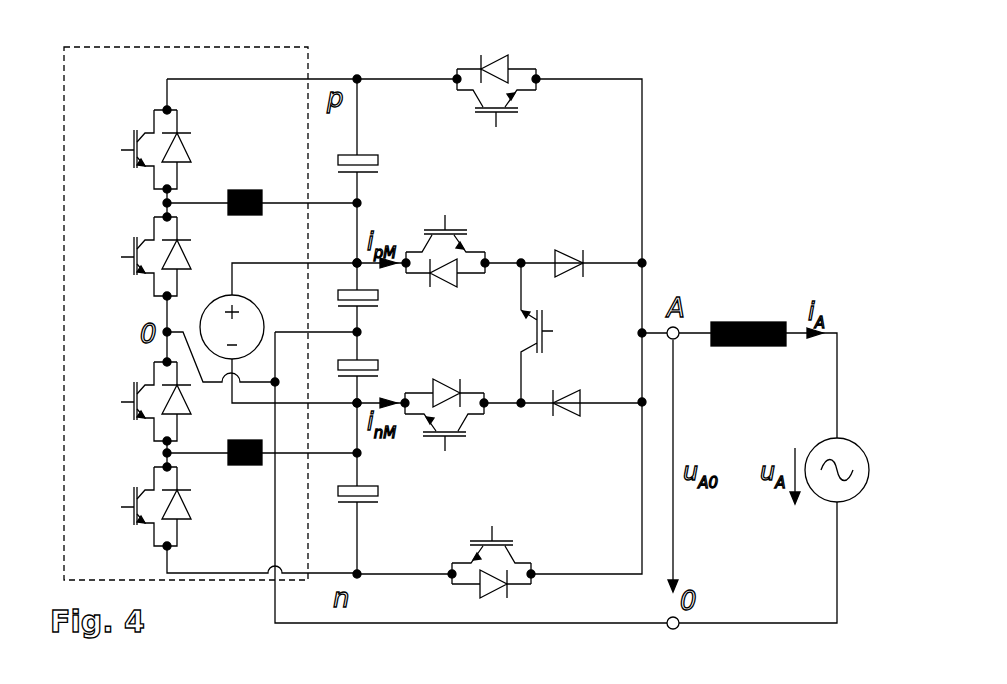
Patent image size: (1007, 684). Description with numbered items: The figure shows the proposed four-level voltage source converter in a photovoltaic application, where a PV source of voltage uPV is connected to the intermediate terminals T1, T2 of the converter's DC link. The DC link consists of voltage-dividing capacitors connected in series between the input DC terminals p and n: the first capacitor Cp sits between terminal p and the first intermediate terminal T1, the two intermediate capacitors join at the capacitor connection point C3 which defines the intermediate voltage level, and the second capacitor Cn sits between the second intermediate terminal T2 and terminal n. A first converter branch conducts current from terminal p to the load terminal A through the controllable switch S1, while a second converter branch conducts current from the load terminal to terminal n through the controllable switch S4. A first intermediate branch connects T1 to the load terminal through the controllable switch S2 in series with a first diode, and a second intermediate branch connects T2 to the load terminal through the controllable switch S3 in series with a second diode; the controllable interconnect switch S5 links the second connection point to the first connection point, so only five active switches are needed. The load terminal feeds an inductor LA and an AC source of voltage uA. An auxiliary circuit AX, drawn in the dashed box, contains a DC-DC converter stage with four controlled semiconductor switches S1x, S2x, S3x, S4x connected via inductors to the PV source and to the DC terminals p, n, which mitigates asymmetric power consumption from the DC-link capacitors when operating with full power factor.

The auxiliary circuit AX is at (186, 313).
The controlled semiconductor switch S1x is at (142, 149).
The controlled semiconductor switch S2x is at (142, 256).
The controlled semiconductor switch S3x is at (142, 401).
The controlled semiconductor switch S4x is at (142, 506).
The controllable switch S1 is at (496, 111).
The controllable switch S2 is at (445, 236).
The controllable switch S3 is at (444, 433).
The controllable switch S4 is at (491, 548).
The controllable interconnect switch S5 is at (555, 333).
The first capacitor Cp is at (380, 156).
The capacitor connection point C3 is at (374, 333).
The second capacitor Cn is at (377, 496).
The PV source voltage uPV is at (232, 327).
The inductor LA is at (748, 317).
The AC voltage source uA is at (837, 470).
The first intermediate terminal T1 is at (341, 243).
The second intermediate terminal T2 is at (340, 423).